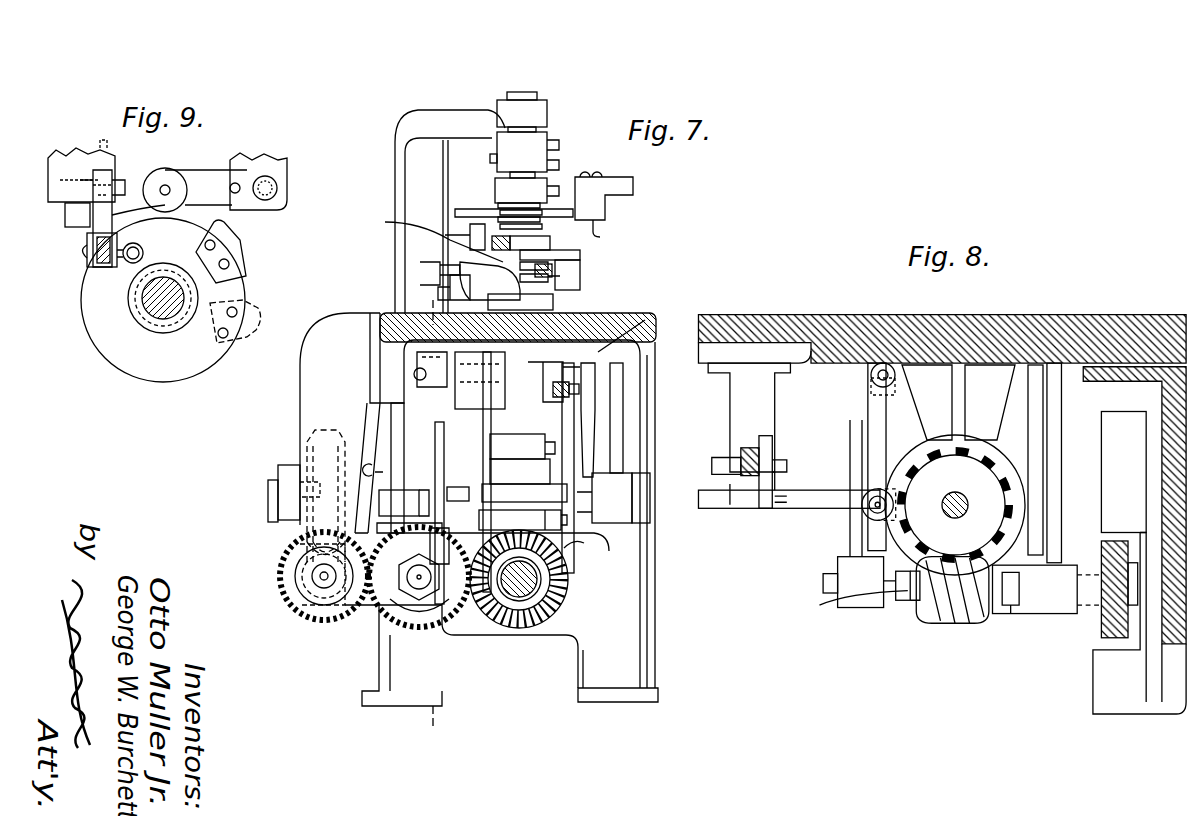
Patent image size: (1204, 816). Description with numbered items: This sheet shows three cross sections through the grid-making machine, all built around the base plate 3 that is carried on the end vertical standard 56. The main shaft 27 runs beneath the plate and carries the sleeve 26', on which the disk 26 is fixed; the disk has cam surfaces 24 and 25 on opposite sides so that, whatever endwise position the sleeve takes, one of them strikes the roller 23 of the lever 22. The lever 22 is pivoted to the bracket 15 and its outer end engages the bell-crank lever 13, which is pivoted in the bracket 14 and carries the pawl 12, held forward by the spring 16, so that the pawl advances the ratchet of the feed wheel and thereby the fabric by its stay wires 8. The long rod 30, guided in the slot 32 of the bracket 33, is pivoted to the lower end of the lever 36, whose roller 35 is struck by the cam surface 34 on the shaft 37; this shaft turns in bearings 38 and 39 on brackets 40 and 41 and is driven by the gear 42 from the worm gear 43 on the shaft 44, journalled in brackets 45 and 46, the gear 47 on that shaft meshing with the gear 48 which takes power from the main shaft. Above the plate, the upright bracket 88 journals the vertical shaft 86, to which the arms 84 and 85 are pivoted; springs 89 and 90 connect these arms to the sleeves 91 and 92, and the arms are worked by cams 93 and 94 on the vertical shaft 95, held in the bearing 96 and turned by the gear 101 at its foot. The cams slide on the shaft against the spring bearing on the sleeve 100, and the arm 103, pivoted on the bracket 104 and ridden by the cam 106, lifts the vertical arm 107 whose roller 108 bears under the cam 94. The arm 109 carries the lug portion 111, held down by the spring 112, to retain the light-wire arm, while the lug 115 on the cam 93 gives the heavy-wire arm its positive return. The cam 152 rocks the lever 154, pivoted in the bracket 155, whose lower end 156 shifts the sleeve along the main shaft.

In FIG. 7, the base plate 3 is at (518, 314).
In FIG. 8, the base plate 3 is at (966, 322).
In FIG. 7, the stay wires 8 is at (432, 511).
In FIG. 9, the pawl 12 is at (104, 262).
In FIG. 9, the bell-crank lever 13 is at (75, 230).
In FIG. 9, the bracket 14 is at (114, 170).
In FIG. 9, the bracket 15 is at (280, 160).
In FIG. 9, the spring 16 is at (136, 247).
In FIG. 9, the lever 22 is at (208, 175).
In FIG. 9, the roller 23 is at (168, 182).
In FIG. 9, the cam surface 24 is at (240, 250).
In FIG. 9, the cam surface 25 is at (258, 310).
In FIG. 9, the disk 26 is at (163, 300).
In FIG. 7, the sleeve 26' is at (588, 579).
In FIG. 9, the main shaft 27 is at (158, 308).
In FIG. 7, the main shaft 27 is at (519, 602).
In FIG. 7, the rod 30 is at (413, 499).
In FIG. 8, the rod 30 is at (730, 510).
In FIG. 8, the slot 32 is at (767, 487).
In FIG. 8, the bracket 33 is at (758, 408).
In FIG. 7, the cam surface 34 is at (440, 430).
In FIG. 8, the cam surface 34 is at (916, 553).
In FIG. 7, the roller 35 is at (442, 499).
In FIG. 8, the roller 35 is at (871, 496).
In FIG. 7, the lever 36 is at (400, 409).
In FIG. 8, the lever 36 is at (868, 431).
In FIG. 7, the shaft 37 is at (282, 493).
In FIG. 8, the shaft 37 is at (955, 505).
In FIG. 7, the bearing 38 is at (375, 461).
In FIG. 7, the bearing 39 is at (612, 525).
In FIG. 7, the bracket 40 is at (397, 420).
In FIG. 8, the bracket 40 is at (911, 401).
In FIG. 7, the bracket 41 is at (598, 420).
In FIG. 7, the gear 42 is at (325, 442).
In FIG. 8, the gear 42 is at (1005, 468).
In FIG. 8, the worm gear 43 is at (925, 614).
In FIG. 8, the shaft 44 is at (1083, 606).
In FIG. 7, the bracket 45 is at (300, 380).
In FIG. 8, the bracket 45 is at (857, 526).
In FIG. 8, the bracket 46 is at (1050, 510).
In FIG. 7, the gear 47 is at (313, 616).
In FIG. 8, the gear 47 is at (1105, 633).
In FIG. 7, the gear 48 is at (421, 621).
In FIG. 7, the end vertical standard 56 is at (652, 634).
In FIG. 8, the end vertical standard 56 is at (1170, 712).
In FIG. 7, the arm 84 is at (550, 242).
In FIG. 7, the arm 85 is at (432, 237).
In FIG. 7, the vertical shaft 86 is at (545, 124).
In FIG. 7, the upright bracket 88 is at (395, 192).
In FIG. 7, the spring 89 is at (505, 215).
In FIG. 7, the spring 90 is at (565, 290).
In FIG. 7, the sleeve 91 is at (527, 187).
In FIG. 7, the sleeve 92 is at (553, 304).
In FIG. 7, the cam 93 is at (609, 232).
In FIG. 7, the cam 94 is at (582, 255).
In FIG. 7, the vertical shaft 95 is at (522, 92).
In FIG. 7, the bearing 96 is at (540, 115).
In FIG. 7, the sleeve 100 is at (490, 158).
In FIG. 7, the gear 101 is at (523, 520).
In FIG. 7, the arm 103 is at (580, 394).
In FIG. 7, the bracket 104 is at (554, 395).
In FIG. 7, the cam 106 is at (576, 460).
In FIG. 7, the vertical arm 107 is at (645, 316).
In FIG. 7, the roller 108 is at (580, 272).
In FIG. 7, the arm 109 is at (490, 281).
In FIG. 7, the lug portion 111 is at (420, 270).
In FIG. 7, the spring 112 is at (432, 287).
In FIG. 7, the lug 115 is at (622, 180).
In FIG. 7, the cam 152 is at (452, 474).
In FIG. 7, the lever 154 is at (474, 450).
In FIG. 7, the bracket 155 is at (505, 367).
In FIG. 7, the lower end 156 is at (543, 613).